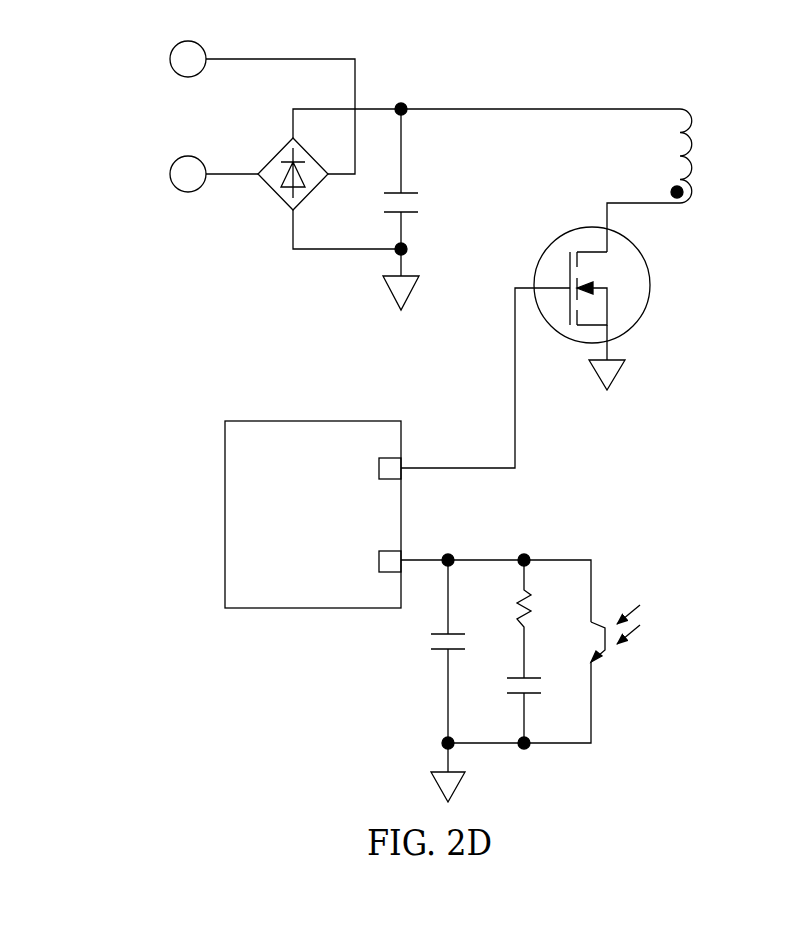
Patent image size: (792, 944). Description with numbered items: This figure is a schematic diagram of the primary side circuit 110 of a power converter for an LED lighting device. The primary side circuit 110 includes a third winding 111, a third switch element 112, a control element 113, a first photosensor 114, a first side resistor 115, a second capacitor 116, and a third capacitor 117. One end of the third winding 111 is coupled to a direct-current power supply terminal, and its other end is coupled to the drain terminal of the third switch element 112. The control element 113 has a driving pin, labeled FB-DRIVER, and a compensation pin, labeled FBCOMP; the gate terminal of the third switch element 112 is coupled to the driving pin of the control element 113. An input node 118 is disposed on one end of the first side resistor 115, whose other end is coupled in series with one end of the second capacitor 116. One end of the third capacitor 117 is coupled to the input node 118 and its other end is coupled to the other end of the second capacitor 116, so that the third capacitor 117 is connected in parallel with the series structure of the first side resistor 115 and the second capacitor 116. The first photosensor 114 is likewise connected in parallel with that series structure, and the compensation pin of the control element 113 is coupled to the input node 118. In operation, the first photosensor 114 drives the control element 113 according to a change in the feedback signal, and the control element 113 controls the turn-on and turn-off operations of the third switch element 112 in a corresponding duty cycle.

The primary side circuit 110 is at (193, 772).
The third winding 111 is at (690, 175).
The third switch element 112 is at (643, 317).
The control element 113 is at (335, 420).
The first photosensor 114 is at (603, 660).
The first side resistor 115 is at (528, 613).
The second capacitor 116 is at (537, 697).
The third capacitor 117 is at (445, 650).
The input node 118 is at (524, 557).